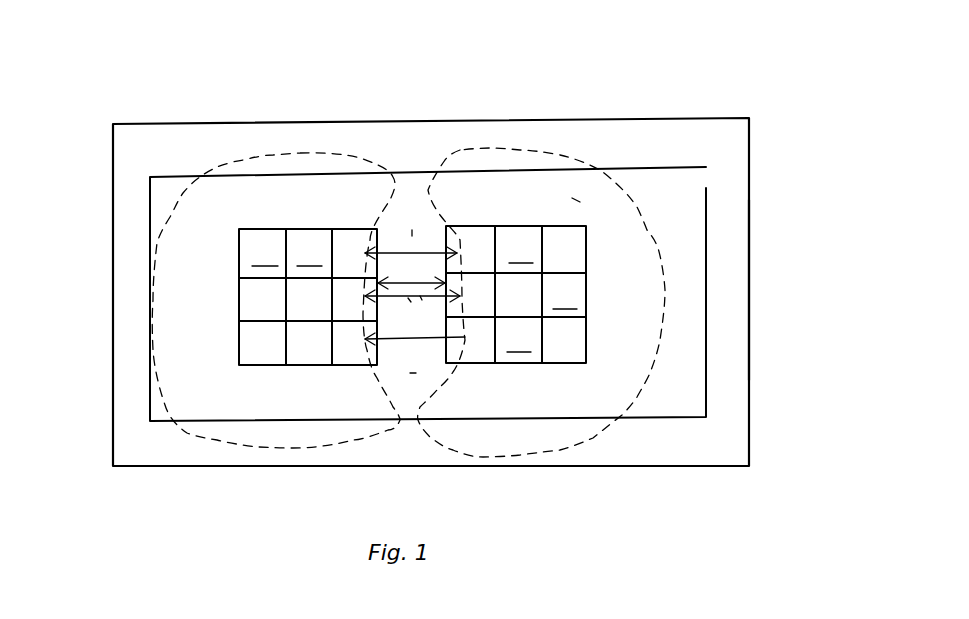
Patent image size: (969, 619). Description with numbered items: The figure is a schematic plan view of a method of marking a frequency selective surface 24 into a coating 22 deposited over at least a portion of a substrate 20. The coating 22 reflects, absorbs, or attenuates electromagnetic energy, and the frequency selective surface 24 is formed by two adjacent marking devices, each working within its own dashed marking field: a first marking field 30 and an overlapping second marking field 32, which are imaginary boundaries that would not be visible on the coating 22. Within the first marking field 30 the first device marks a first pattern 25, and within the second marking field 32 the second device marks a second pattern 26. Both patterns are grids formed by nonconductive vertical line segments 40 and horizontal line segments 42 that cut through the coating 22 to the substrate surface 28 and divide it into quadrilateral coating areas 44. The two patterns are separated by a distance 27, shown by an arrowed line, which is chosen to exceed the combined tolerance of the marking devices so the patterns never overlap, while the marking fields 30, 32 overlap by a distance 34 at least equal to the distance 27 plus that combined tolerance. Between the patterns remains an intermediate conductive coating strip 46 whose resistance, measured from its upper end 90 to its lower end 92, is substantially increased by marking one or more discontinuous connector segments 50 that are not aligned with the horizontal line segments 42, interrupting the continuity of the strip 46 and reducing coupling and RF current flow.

The substrate 20 is at (749, 466).
The coating 22 is at (693, 395).
The frequency selective surface 24 is at (577, 200).
The first pattern 25 is at (232, 276).
The second pattern 26 is at (503, 217).
The distance between patterns 27 is at (400, 280).
The substrate surface 28 is at (725, 298).
The first marking field 30 is at (210, 458).
The second marking field 32 is at (570, 453).
The overlap distance 34 is at (413, 375).
The vertical line segments 40 is at (286, 229).
The horizontal line segments 42 is at (240, 280).
The coating areas 44 is at (413, 297).
The intermediate conductive coating strip 46 is at (410, 270).
The connector segments 50 is at (433, 237).
The upper end of strip 90 is at (420, 233).
The lower end of strip 92 is at (410, 300).